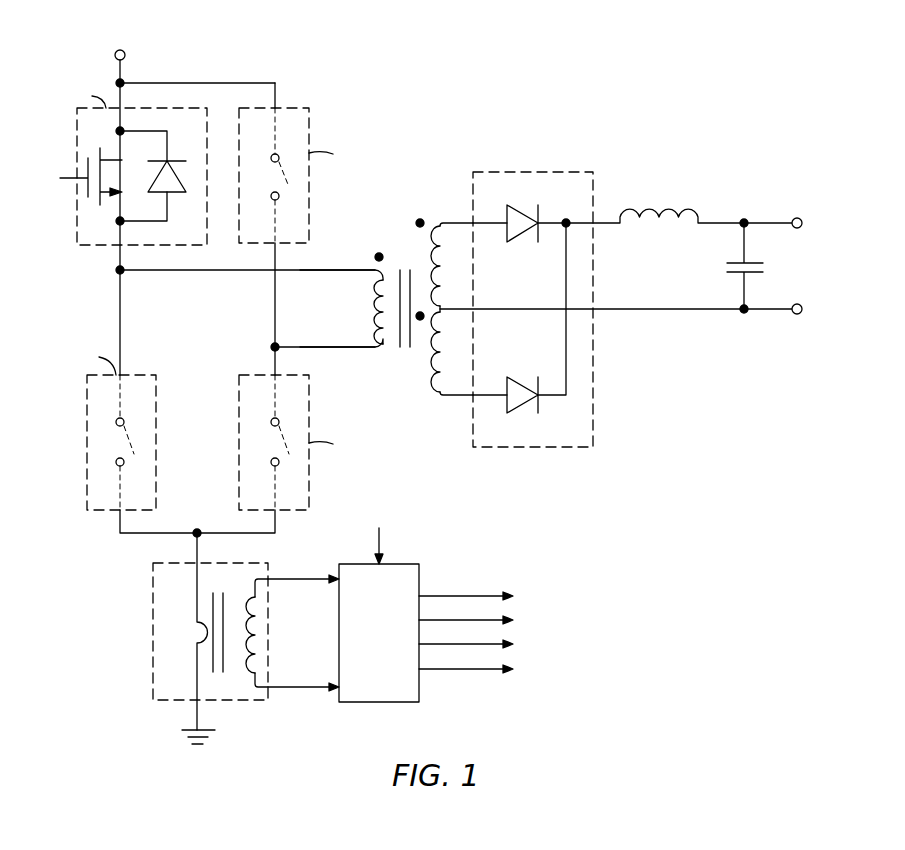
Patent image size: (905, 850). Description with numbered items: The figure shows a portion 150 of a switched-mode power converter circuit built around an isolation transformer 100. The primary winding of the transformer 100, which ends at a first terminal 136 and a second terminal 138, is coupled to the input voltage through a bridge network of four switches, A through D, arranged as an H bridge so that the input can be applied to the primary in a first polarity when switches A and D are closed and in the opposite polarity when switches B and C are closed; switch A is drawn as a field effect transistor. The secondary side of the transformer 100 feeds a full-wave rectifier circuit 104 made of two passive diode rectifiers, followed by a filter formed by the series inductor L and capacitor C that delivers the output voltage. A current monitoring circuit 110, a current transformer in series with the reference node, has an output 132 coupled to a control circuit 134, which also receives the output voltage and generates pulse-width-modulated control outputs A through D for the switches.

The portion of a switched-mode power converter circuit 150 is at (683, 40).
The isolation transformer 100 is at (462, 202).
The first terminal 136 is at (348, 269).
The second terminal 138 is at (347, 348).
The rectifier circuit 104 is at (536, 172).
The current monitoring circuit 110 is at (153, 632).
The output 132 is at (305, 578).
The control circuit 134 is at (397, 563).